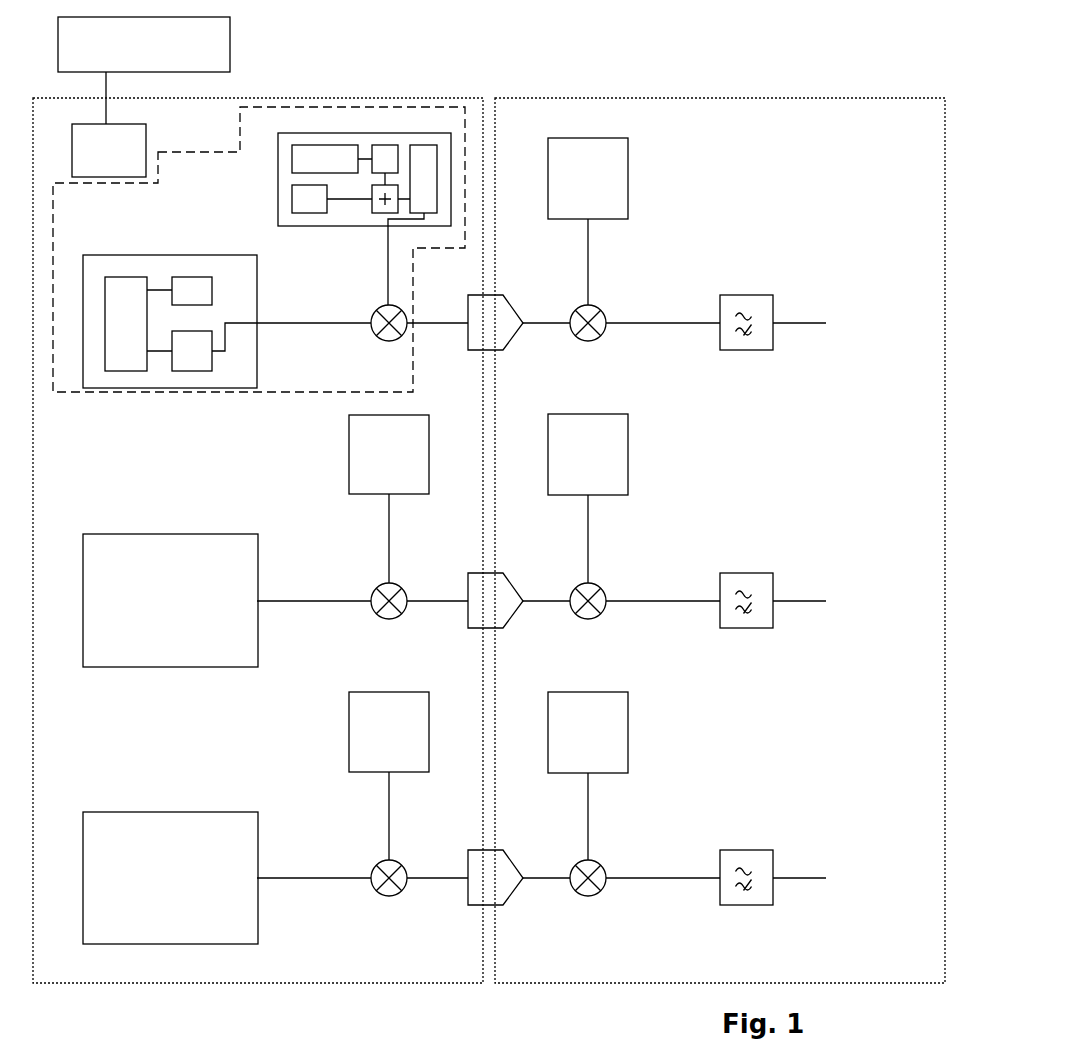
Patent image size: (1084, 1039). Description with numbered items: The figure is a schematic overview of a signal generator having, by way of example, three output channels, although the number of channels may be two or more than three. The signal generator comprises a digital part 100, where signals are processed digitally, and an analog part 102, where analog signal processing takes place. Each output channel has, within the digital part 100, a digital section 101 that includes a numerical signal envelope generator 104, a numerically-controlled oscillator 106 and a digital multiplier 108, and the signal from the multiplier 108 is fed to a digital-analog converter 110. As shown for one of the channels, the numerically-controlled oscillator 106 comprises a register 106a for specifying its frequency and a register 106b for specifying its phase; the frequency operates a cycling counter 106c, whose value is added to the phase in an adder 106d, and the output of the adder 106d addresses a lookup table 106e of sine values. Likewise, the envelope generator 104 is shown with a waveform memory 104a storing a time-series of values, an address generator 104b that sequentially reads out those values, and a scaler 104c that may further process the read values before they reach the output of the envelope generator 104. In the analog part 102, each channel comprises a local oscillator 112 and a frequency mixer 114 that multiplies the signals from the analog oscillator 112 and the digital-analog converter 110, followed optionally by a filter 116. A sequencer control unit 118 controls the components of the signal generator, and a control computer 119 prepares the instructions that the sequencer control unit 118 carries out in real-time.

The digital part 100 is at (258, 566).
The digital section 101 is at (327, 224).
The analog part 102 is at (720, 566).
The numerical signal envelope generator 104 is at (170, 568).
The waveform memory 104a is at (160, 375).
The address generator 104b is at (162, 266).
The scaler 104c is at (219, 382).
The numerically-controlled oscillator 106 is at (328, 452).
The register for specifying frequency 106a is at (305, 141).
The register for specifying phase 106b is at (266, 187).
The cycling counter 106c is at (420, 102).
The adder 106d is at (350, 224).
The lookup table of sine values 106e is at (459, 134).
The digital multiplier 108 is at (360, 614).
The digital-analog converter 110 is at (472, 581).
The local oscillator 112 is at (629, 499).
The frequency mixer 114 is at (620, 585).
The filter 116 is at (768, 576).
The sequencer control unit 118 is at (148, 124).
The control computer 119 is at (197, 45).